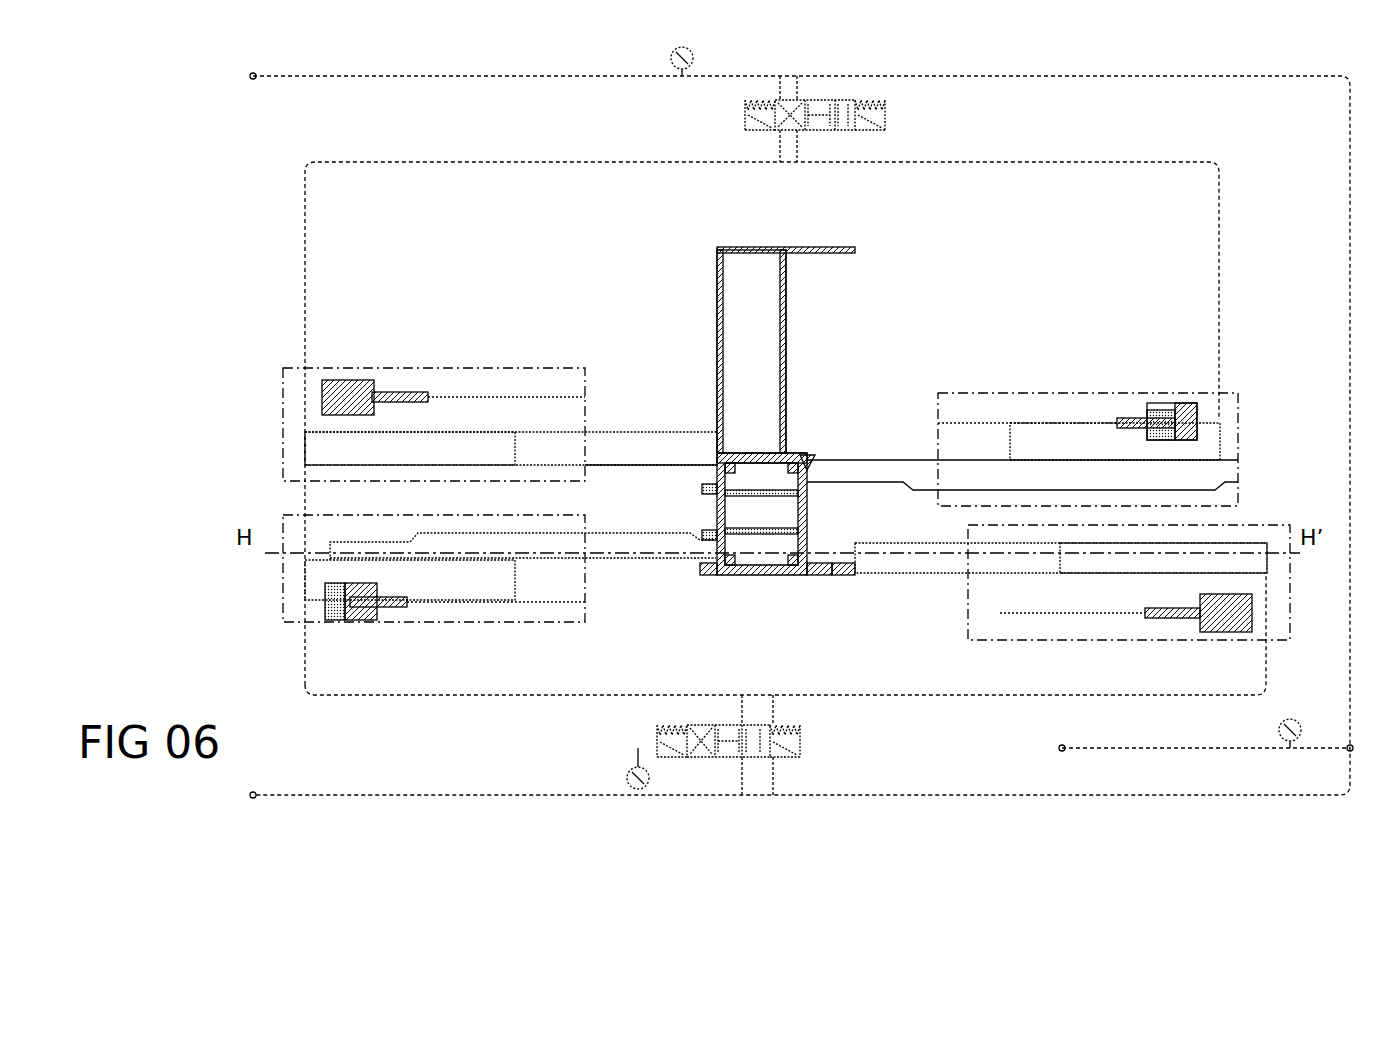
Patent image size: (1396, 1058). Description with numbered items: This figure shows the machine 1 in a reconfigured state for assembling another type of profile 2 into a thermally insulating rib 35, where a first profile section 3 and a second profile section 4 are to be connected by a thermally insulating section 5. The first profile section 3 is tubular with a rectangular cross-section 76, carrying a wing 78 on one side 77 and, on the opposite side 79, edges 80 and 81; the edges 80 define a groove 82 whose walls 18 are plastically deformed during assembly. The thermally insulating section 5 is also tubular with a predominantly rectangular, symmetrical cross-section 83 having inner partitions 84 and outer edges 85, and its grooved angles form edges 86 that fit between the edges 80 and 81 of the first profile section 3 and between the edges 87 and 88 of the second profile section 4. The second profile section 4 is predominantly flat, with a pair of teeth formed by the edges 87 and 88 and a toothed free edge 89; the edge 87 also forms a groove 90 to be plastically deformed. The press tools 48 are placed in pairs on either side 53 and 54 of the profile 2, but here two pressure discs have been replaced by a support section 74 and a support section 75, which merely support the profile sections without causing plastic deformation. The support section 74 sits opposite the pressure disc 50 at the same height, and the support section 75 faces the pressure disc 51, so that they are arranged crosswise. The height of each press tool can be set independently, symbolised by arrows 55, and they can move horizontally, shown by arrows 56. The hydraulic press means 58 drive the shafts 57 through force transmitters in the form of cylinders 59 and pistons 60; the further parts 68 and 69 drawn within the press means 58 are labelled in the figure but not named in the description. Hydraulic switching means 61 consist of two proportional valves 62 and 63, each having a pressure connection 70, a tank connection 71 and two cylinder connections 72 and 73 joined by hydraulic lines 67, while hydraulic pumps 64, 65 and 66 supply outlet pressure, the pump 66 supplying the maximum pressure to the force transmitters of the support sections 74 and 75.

The machine 1 is at (160, 132).
The profile 2 is at (690, 286).
The first profile section 3 is at (800, 346).
The second profile section 4 is at (712, 590).
The thermally insulating section 5 is at (682, 480).
The walls 18 is at (808, 466).
The thermally insulating rib 35 is at (672, 514).
The press tools 48 is at (470, 298).
The pressure disc 50 is at (1034, 470).
The pressure disc 51 is at (548, 560).
The side 53 is at (610, 278).
The side 54 is at (915, 316).
The arrows 55 is at (275, 385).
The arrows 56 is at (480, 357).
The shafts 57 is at (500, 450).
The press means 58 is at (232, 386).
The cylinders 59 is at (362, 412).
The pistons 60 is at (390, 392).
The hydraulic switching means 61 is at (690, 118).
The proportional valve 62 is at (852, 130).
The proportional valve 63 is at (709, 757).
The hydraulic pump 64 is at (670, 45).
The hydraulic pump 65 is at (626, 780).
The hydraulic pump 66 is at (1302, 732).
The hydraulic lines 67 is at (508, 78).
The piston 68 is at (338, 392).
The cylinder chamber 69 is at (330, 402).
The pressure connection 70 is at (785, 100).
The tank connection 71 is at (797, 100).
The cylinder connection 72 is at (781, 130).
The cylinder connection 73 is at (797, 130).
The support section 74 is at (620, 442).
The support section 75 is at (885, 575).
The rectangular cross-section 76 is at (752, 275).
The side 77 is at (812, 262).
The wing 78 is at (805, 247).
The opposite side 79 is at (848, 440).
The edges 80 is at (806, 455).
The edges 81 is at (717, 458).
The groove 82 is at (812, 458).
The cross-section 83 is at (812, 514).
The inner partitions 84 is at (740, 530).
The edges 85 is at (692, 498).
The edges 86 is at (785, 466).
The edge 87 is at (705, 566).
The edge 88 is at (815, 575).
The toothed free edge 89 is at (845, 578).
The groove 90 is at (730, 575).